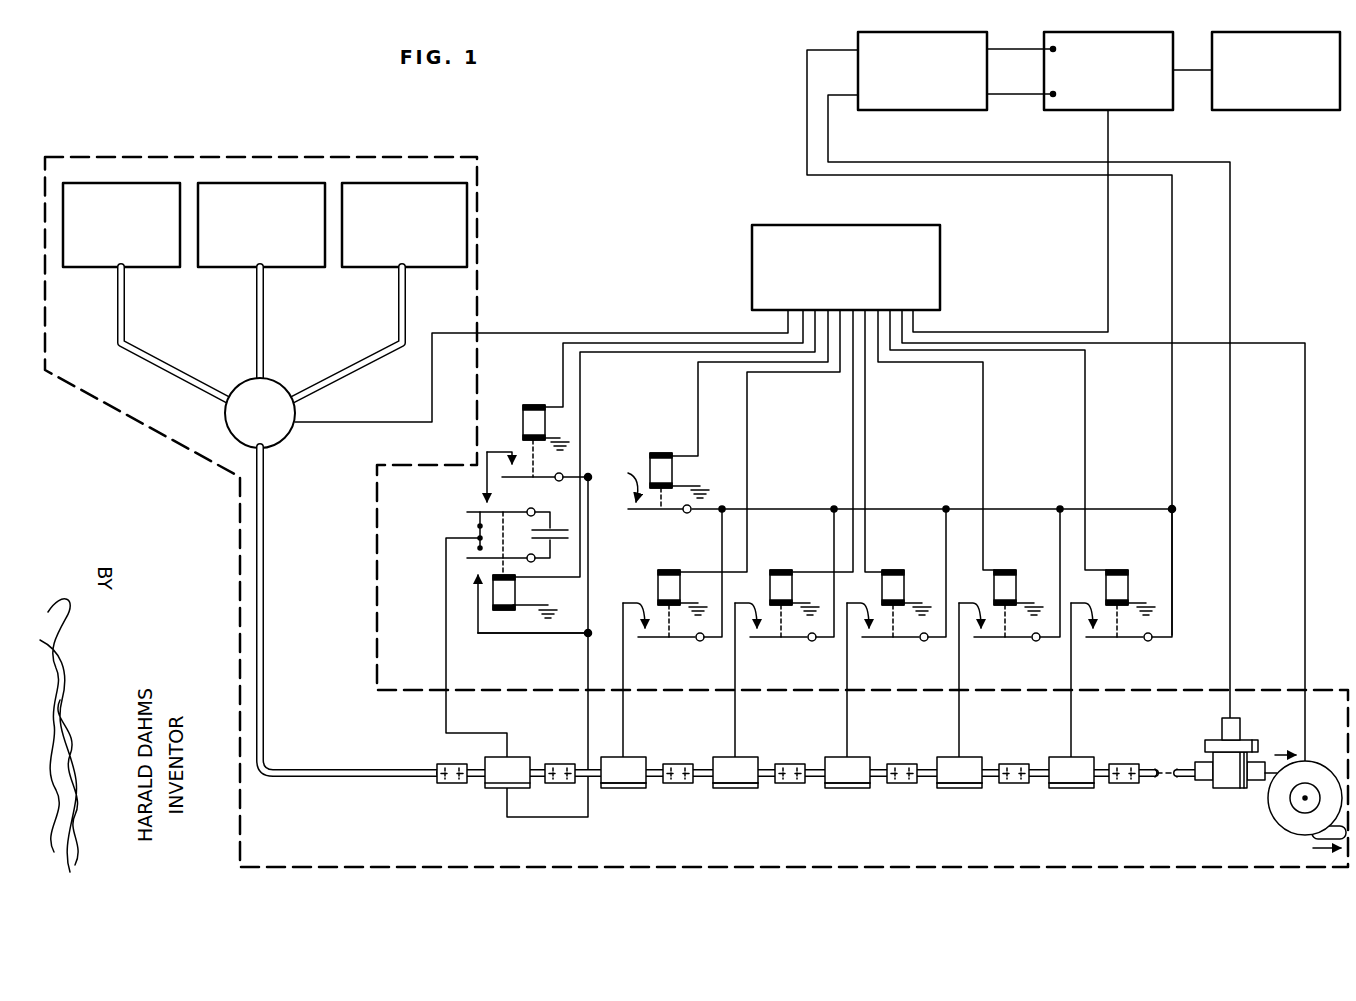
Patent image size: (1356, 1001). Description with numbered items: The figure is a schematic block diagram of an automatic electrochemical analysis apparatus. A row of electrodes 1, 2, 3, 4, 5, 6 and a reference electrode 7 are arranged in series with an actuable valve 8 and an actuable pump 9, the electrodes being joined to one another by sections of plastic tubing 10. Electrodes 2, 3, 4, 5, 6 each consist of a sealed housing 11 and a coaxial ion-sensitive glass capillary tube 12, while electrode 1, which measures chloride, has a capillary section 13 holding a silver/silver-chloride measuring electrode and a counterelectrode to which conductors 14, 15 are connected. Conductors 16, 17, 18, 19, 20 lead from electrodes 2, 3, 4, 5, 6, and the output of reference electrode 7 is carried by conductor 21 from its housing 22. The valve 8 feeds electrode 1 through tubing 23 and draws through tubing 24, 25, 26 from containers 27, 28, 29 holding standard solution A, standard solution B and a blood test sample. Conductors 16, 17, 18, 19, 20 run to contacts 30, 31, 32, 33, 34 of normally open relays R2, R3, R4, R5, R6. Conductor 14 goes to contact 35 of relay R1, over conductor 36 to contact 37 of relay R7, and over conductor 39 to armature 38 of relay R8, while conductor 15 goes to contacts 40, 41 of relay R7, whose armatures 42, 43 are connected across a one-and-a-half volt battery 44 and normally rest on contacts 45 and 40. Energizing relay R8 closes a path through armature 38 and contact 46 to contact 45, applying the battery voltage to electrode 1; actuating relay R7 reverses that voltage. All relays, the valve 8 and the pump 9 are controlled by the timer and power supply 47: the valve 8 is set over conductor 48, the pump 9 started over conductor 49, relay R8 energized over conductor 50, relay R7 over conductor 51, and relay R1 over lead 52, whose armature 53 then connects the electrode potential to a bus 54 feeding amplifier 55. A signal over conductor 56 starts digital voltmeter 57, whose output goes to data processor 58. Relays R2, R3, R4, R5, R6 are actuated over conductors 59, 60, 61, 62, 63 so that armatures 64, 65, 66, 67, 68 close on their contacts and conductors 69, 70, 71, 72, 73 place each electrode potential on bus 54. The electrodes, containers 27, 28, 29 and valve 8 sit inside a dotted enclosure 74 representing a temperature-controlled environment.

The electrode 1 is at (522, 748).
The electrode 2 is at (643, 748).
The electrode 3 is at (755, 748).
The electrode 4 is at (867, 748).
The electrode 5 is at (979, 748).
The electrode 6 is at (1084, 748).
The reference electrode 7 is at (1245, 757).
The actuable valve 8 is at (282, 439).
The actuable pump 9 is at (1320, 772).
The plastic tubing 10 is at (567, 785).
The sealed housing 11 is at (619, 789).
The capillary tube 12 is at (657, 769).
The capillary section 13 is at (477, 785).
The conductor 14 is at (588, 596).
The conductor 15 is at (448, 656).
The conductor 16 is at (625, 655).
The conductor 17 is at (737, 655).
The conductor 18 is at (849, 655).
The conductor 19 is at (961, 655).
The conductor 20 is at (1073, 655).
The conductor 21 is at (1230, 646).
The housing 22 is at (1230, 788).
The tubing 23 is at (265, 642).
The tubing 24 is at (126, 304).
The tubing 25 is at (265, 304).
The tubing 26 is at (407, 304).
The container 27 is at (120, 182).
The container 28 is at (258, 182).
The test sample container 29 is at (397, 182).
The contact 30 is at (636, 602).
The contact 31 is at (748, 602).
The contact 32 is at (860, 602).
The contact 33 is at (972, 602).
The contact 34 is at (1084, 602).
The contact 35 is at (628, 473).
The conductor 36 is at (510, 635).
The contact 37 is at (476, 580).
The armature 38 is at (528, 480).
The conductor 39 is at (572, 477).
The contact 40 is at (477, 547).
The contact 41 is at (476, 526).
The armature 42 is at (466, 511).
The armature 43 is at (466, 560).
The battery 44 is at (556, 540).
The contact 45 is at (484, 496).
The contact 46 is at (510, 460).
The timer and power supply 47 is at (940, 260).
The conductor 48 is at (530, 330).
The conductor 49 is at (1305, 514).
The conductor 50 is at (558, 372).
The conductor 51 is at (580, 382).
The lead 52 is at (698, 394).
The armature 53 is at (633, 512).
The bus 54 is at (891, 507).
The amplifier 55 is at (915, 30).
The conductor 56 is at (1108, 252).
The digital voltmeter 57 is at (1100, 30).
The data processor 58 is at (1268, 30).
The conductor 59 is at (747, 388).
The conductor 60 is at (853, 406).
The conductor 61 is at (865, 400).
The conductor 62 is at (982, 404).
The conductor 63 is at (1084, 404).
The armature 64 is at (672, 640).
The armature 65 is at (784, 640).
The armature 66 is at (896, 640).
The armature 67 is at (1008, 640).
The armature 68 is at (1120, 640).
The conductor 69 is at (721, 534).
The conductor 70 is at (832, 534).
The conductor 71 is at (945, 534).
The conductor 72 is at (1059, 534).
The conductor 73 is at (1169, 534).
The dotted enclosure 74 is at (153, 440).
The relay R1 is at (672, 472).
The normally open relay R2 is at (680, 587).
The normally open relay R3 is at (792, 587).
The normally open relay R4 is at (904, 587).
The normally open relay R5 is at (1016, 587).
The normally open relay R6 is at (1128, 587).
The relay R7 is at (513, 592).
The relay R8 is at (545, 422).